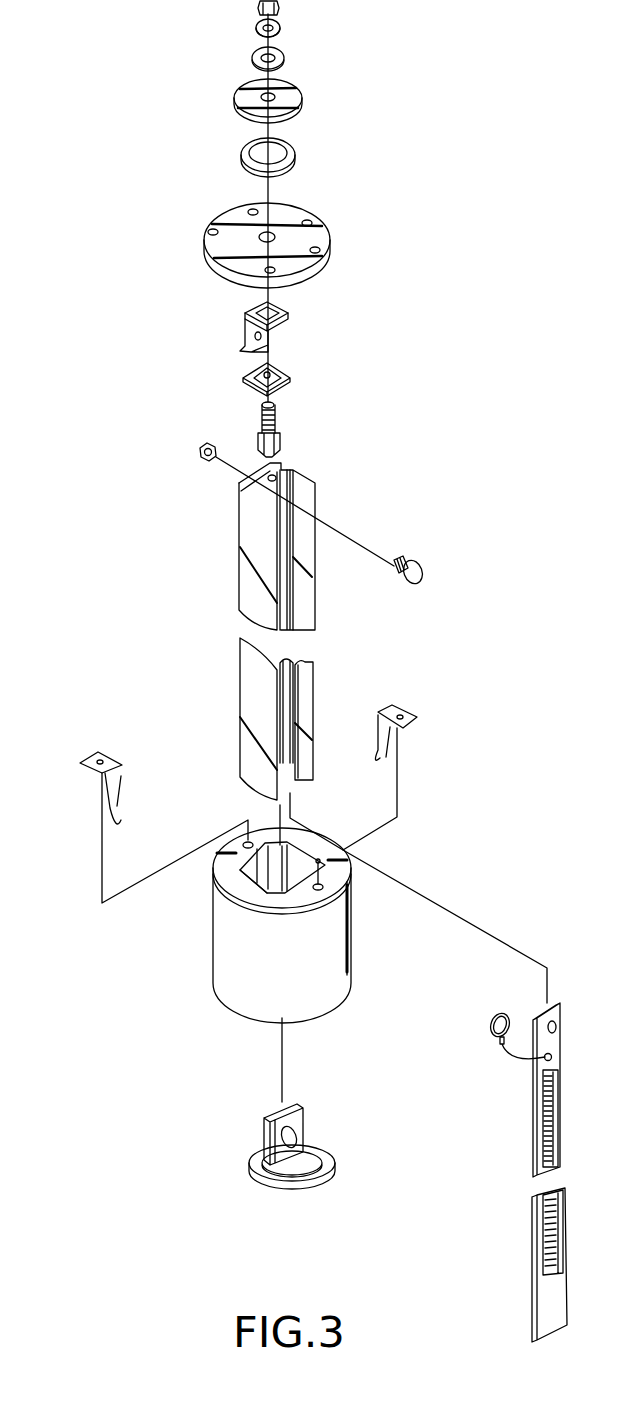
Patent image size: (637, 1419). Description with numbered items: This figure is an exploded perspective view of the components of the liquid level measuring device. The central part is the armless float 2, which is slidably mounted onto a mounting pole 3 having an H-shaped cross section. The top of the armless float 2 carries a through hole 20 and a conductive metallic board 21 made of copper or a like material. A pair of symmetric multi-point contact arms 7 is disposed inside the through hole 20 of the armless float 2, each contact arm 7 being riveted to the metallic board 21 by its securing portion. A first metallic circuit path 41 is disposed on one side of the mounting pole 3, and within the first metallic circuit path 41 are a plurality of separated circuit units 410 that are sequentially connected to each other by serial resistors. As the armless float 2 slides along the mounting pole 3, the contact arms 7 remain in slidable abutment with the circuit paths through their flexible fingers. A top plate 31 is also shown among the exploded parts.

The armless float 2 is at (269, 945).
The through hole 20 is at (250, 887).
The conductive metallic board 21 is at (317, 905).
The mounting pole 3 is at (317, 500).
The circular top plate 31 is at (327, 250).
The contact arm 7 is at (98, 773).
The first metallic circuit path 41 is at (539, 1172).
The circuit units 410 is at (540, 1128).